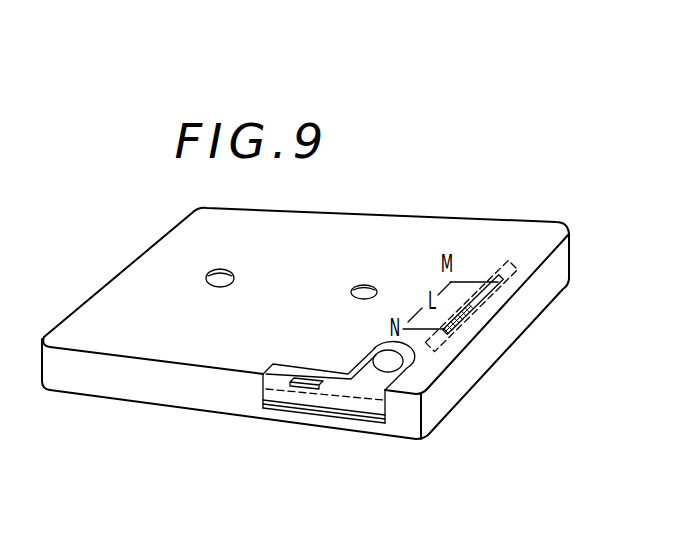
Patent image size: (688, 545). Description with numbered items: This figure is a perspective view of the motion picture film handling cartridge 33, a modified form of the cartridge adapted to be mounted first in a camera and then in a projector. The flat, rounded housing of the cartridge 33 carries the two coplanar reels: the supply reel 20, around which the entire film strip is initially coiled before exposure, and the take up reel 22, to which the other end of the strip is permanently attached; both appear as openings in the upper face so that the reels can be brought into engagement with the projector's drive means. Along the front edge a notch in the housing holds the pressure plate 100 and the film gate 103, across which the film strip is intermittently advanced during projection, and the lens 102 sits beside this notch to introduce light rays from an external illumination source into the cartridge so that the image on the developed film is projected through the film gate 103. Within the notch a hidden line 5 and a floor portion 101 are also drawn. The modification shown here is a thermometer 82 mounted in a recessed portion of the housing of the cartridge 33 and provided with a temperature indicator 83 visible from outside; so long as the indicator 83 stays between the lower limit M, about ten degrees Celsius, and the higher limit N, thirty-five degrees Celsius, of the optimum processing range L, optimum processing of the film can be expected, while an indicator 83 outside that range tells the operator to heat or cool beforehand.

The motion picture film handling cartridge 33 is at (408, 235).
The take up reel 22 is at (220, 274).
The supply reel 20 is at (363, 288).
The lens 102 is at (386, 358).
The pressure plate 100 is at (302, 381).
The hidden groove 5 is at (342, 407).
The recess floor rail left portion 101 is at (302, 402).
The film gate 103 is at (373, 412).
The thermometer 82 is at (480, 295).
The temperature indicator 83 is at (468, 322).